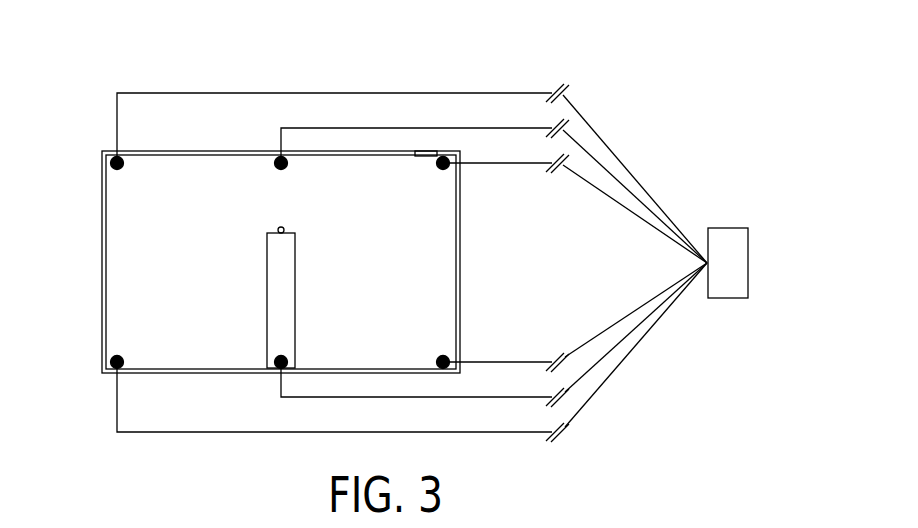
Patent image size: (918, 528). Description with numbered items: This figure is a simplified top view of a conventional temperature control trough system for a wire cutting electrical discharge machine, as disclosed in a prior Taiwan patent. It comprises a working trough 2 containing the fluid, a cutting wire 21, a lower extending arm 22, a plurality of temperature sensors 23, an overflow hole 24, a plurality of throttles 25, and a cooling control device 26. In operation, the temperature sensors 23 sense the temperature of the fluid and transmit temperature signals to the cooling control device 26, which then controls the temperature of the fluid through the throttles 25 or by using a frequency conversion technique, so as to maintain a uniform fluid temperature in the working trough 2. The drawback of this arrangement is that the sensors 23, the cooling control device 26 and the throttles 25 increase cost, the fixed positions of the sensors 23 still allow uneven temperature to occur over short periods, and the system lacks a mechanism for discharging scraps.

The working trough 2 is at (698, 93).
The cutting wire 21 is at (280, 228).
The lower extending arm 22 is at (282, 286).
The temperature sensors 23 is at (102, 373).
The overflow hole 24 is at (425, 152).
The throttles 25 is at (566, 93).
The cooling control device 26 is at (729, 228).